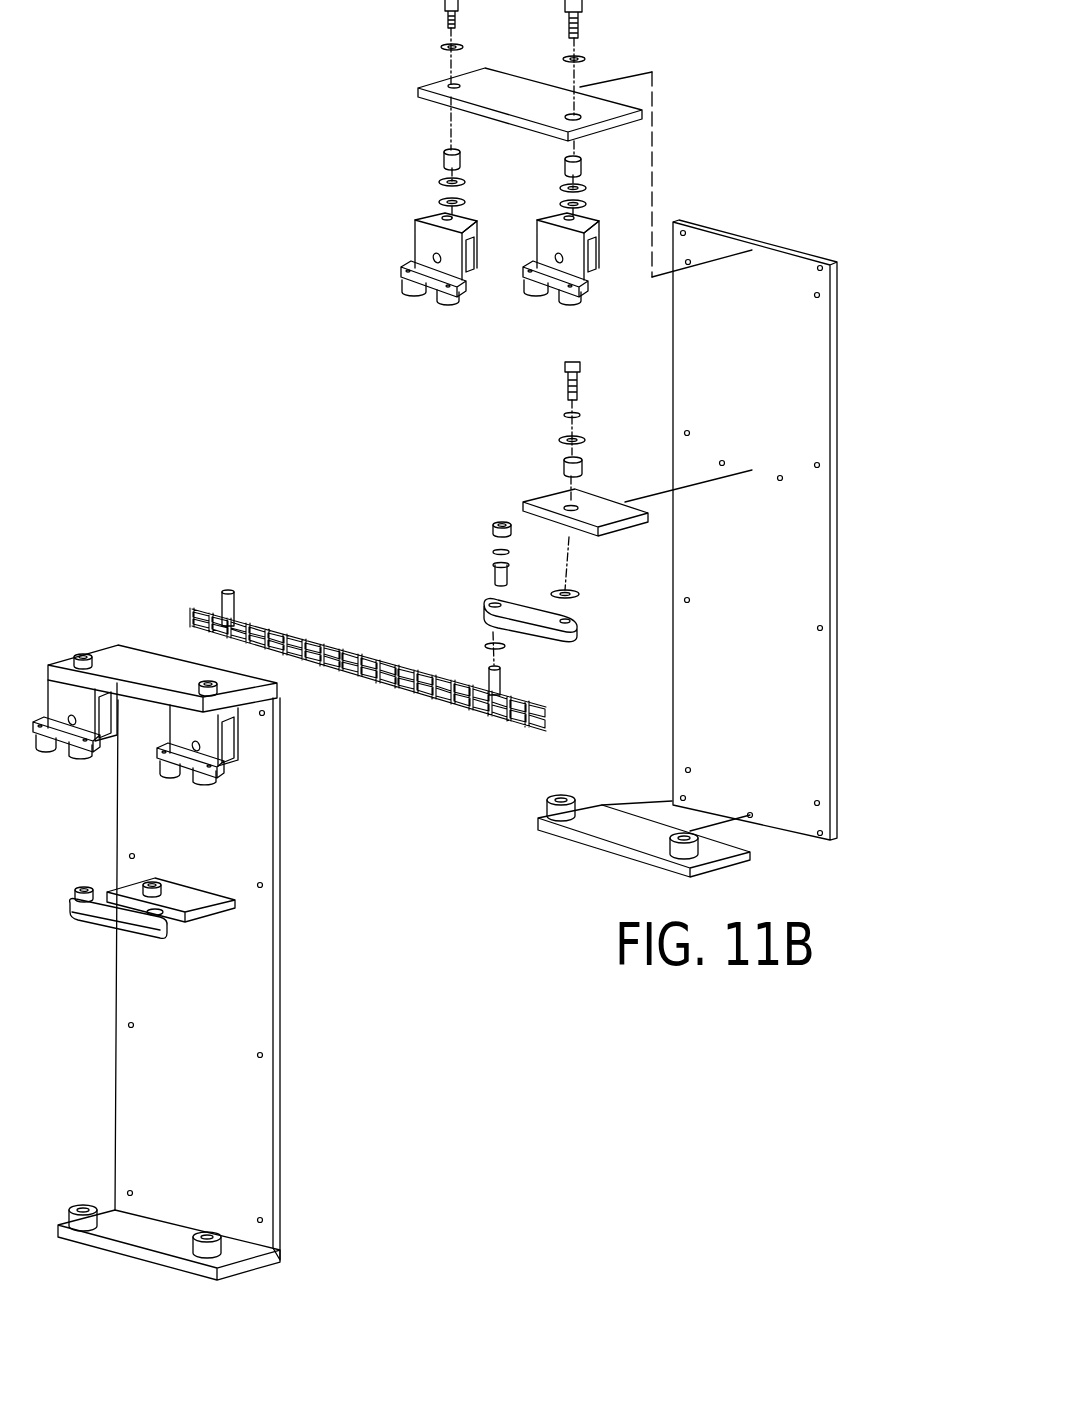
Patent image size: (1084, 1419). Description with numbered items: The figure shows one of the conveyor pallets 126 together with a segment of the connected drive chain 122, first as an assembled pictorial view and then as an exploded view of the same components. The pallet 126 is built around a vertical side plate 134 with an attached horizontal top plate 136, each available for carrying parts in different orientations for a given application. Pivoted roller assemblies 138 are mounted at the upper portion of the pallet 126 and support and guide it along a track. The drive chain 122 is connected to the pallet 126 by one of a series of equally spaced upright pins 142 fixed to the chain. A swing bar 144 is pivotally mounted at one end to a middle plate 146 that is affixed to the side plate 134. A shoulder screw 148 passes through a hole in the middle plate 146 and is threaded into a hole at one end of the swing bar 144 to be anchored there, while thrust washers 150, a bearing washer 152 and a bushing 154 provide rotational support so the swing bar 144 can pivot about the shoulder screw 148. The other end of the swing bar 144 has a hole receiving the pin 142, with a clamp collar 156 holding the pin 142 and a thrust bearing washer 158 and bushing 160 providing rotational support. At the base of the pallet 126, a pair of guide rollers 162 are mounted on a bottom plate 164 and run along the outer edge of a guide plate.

In FIG. 11B, the drive chain 122 is at (340, 645).
In FIG. 11A, the pallet 126 is at (291, 980).
In FIG. 11B, the side plate 134 is at (770, 278).
In FIG. 11A, the side plate 134 is at (247, 866).
In FIG. 11B, the top plate 136 is at (432, 84).
In FIG. 11A, the top plate 136 is at (140, 681).
In FIG. 11B, the pivoted roller assembly 138 is at (408, 248).
In FIG. 11A, the pivoted roller assembly 138 is at (75, 776).
In FIG. 11B, the upright pin 142 is at (500, 688).
In FIG. 11B, the swing bar 144 is at (479, 611).
In FIG. 11A, the swing bar 144 is at (156, 932).
In FIG. 11B, the middle plate 146 is at (541, 490).
In FIG. 11B, the shoulder screw 148 is at (570, 362).
In FIG. 11B, the thrust washer 150 is at (548, 433).
In FIG. 11B, the bearing washer 152 is at (550, 408).
In FIG. 11B, the bushing 154 is at (582, 468).
In FIG. 11B, the clamp collar 156 is at (487, 522).
In FIG. 11B, the thrust bearing washer 158 is at (488, 550).
In FIG. 11B, the bushing 160 is at (487, 574).
In FIG. 11B, the guide roller 162 is at (549, 802).
In FIG. 11A, the guide roller 162 is at (72, 1208).
In FIG. 11B, the bottom plate 164 is at (597, 807).
In FIG. 11A, the bottom plate 164 is at (125, 1255).